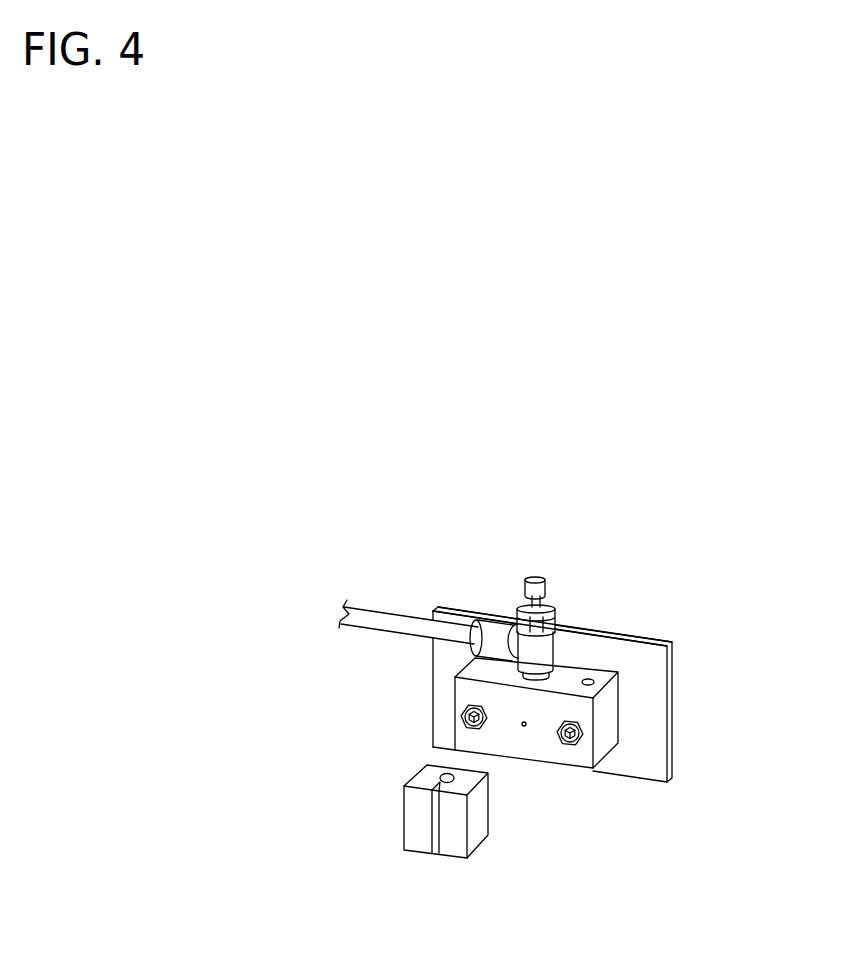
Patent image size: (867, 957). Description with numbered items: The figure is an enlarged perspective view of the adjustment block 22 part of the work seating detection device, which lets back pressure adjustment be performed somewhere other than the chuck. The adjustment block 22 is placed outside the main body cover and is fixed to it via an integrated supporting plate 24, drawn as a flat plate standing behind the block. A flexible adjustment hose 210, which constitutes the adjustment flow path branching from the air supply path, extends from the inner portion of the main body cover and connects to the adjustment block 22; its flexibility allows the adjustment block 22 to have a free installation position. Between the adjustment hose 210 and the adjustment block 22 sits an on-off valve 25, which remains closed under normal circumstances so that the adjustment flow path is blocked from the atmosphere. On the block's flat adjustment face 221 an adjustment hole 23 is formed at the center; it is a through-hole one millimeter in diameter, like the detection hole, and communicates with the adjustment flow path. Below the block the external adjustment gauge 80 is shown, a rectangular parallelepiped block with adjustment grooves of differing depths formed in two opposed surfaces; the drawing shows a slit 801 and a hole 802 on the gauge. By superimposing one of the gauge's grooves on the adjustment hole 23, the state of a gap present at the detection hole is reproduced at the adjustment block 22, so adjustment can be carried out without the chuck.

The adjustment hose 210 is at (367, 620).
The supporting plate 24 is at (653, 691).
The on-off valve 25 is at (547, 652).
The adjustment block 22 is at (612, 737).
The adjustment face 221 is at (578, 758).
The adjustment hole 23 is at (524, 727).
The external adjustment gauge 80 is at (410, 832).
The slit 801 is at (441, 853).
The hole 802 is at (456, 766).